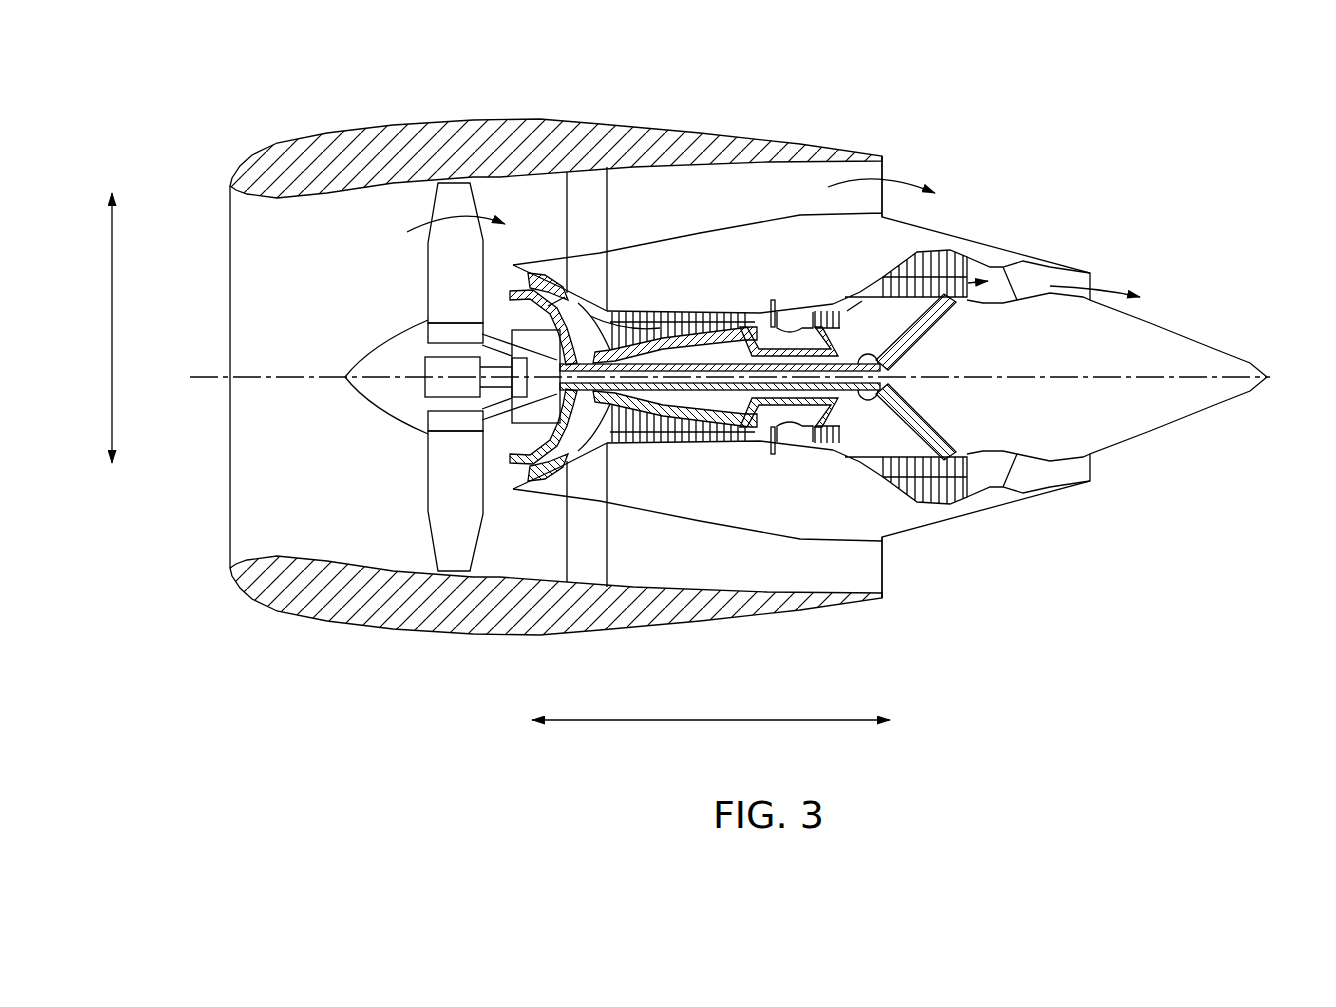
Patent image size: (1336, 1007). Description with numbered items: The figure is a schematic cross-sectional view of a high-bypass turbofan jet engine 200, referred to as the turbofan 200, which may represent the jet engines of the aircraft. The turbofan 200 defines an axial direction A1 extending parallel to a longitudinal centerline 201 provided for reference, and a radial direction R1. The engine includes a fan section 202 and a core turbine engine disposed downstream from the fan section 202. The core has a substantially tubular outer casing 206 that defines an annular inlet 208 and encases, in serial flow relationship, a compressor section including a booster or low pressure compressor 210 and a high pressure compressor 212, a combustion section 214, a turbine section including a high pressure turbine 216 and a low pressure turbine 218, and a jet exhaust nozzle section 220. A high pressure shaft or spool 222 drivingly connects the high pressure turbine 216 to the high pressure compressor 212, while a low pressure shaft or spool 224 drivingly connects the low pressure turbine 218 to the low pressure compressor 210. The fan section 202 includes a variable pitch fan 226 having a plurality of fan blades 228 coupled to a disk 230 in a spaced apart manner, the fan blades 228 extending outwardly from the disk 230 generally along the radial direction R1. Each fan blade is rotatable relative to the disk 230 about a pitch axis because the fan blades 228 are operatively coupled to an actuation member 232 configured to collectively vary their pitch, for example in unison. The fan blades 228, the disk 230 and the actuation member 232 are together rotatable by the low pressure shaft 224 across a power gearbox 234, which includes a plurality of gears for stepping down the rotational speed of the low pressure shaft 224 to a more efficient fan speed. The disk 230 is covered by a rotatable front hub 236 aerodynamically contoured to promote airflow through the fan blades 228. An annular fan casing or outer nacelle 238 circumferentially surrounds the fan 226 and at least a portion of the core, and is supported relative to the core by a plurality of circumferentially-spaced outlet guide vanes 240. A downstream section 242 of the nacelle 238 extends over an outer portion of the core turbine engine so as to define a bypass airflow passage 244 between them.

The high-bypass turbofan jet engine 200 is at (730, 388).
The longitudinal centerline 201 is at (1040, 373).
The fan section 202 is at (436, 319).
The outer casing 206 is at (878, 377).
The annular inlet 208 is at (522, 477).
The low pressure compressor 210 is at (560, 489).
The high pressure compressor 212 is at (637, 442).
The combustion section 214 is at (790, 442).
The high pressure turbine 216 is at (858, 438).
The low pressure turbine 218 is at (943, 503).
The jet exhaust nozzle section 220 is at (1020, 470).
The high pressure shaft 222 is at (729, 282).
The low pressure shaft 224 is at (883, 364).
The variable pitch fan 226 is at (392, 430).
The fan blades 228 is at (432, 535).
The disk 230 is at (437, 334).
The actuation member 232 is at (421, 365).
The power gearbox 234 is at (577, 333).
The rotatable front hub 236 is at (388, 408).
The outer nacelle 238 is at (450, 633).
The outlet guide vanes 240 is at (607, 215).
The downstream section 242 is at (778, 127).
The bypass airflow passage 244 is at (797, 205).
The radial direction R1 is at (113, 243).
The axial direction A1 is at (713, 720).